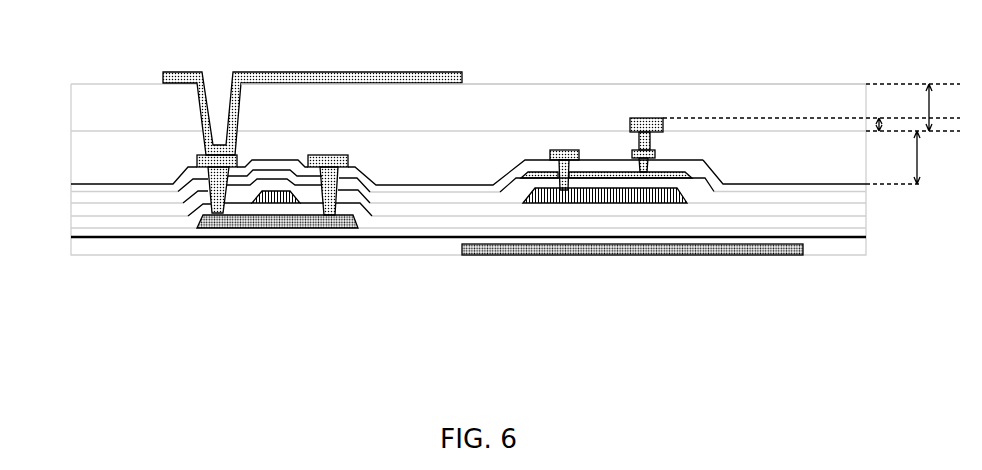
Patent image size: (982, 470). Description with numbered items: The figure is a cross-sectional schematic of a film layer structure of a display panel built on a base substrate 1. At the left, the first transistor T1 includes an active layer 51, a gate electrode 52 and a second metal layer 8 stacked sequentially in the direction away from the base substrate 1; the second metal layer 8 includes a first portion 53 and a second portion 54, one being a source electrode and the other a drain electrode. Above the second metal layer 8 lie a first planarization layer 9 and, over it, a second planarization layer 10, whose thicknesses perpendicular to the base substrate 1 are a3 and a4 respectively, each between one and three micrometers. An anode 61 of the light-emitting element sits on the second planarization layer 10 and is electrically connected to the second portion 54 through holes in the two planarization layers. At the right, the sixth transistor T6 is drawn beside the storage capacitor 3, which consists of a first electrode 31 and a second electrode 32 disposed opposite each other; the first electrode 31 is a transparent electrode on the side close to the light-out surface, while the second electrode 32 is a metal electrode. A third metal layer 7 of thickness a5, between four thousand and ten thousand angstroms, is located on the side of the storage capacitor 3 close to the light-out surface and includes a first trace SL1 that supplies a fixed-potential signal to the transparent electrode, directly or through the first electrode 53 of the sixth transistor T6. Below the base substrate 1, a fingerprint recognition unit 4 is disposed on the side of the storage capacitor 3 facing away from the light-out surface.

The base substrate 1 is at (70, 230).
The storage capacitor 3 is at (606, 247).
The first electrode 31 is at (531, 178).
The second electrode 32 is at (571, 190).
The fingerprint recognition unit 4 is at (772, 255).
The active layer 51 is at (252, 218).
The gate electrode 52 is at (277, 205).
The first portion 53 is at (325, 216).
The second portion 54 is at (215, 216).
The second metal layer 8 is at (419, 174).
The anode 61 is at (163, 74).
The third metal layer 7 is at (682, 123).
The first trace SL1 is at (647, 118).
The first planarization layer 9 is at (863, 178).
The second planarization layer 10 is at (822, 88).
The first transistor T1 is at (277, 259).
The sixth transistor T6 is at (606, 172).
The thickness of the first planarization layer a3 is at (926, 157).
The thickness of the second planarization layer a4 is at (940, 107).
The thickness of the third metal layer a5 is at (890, 124).